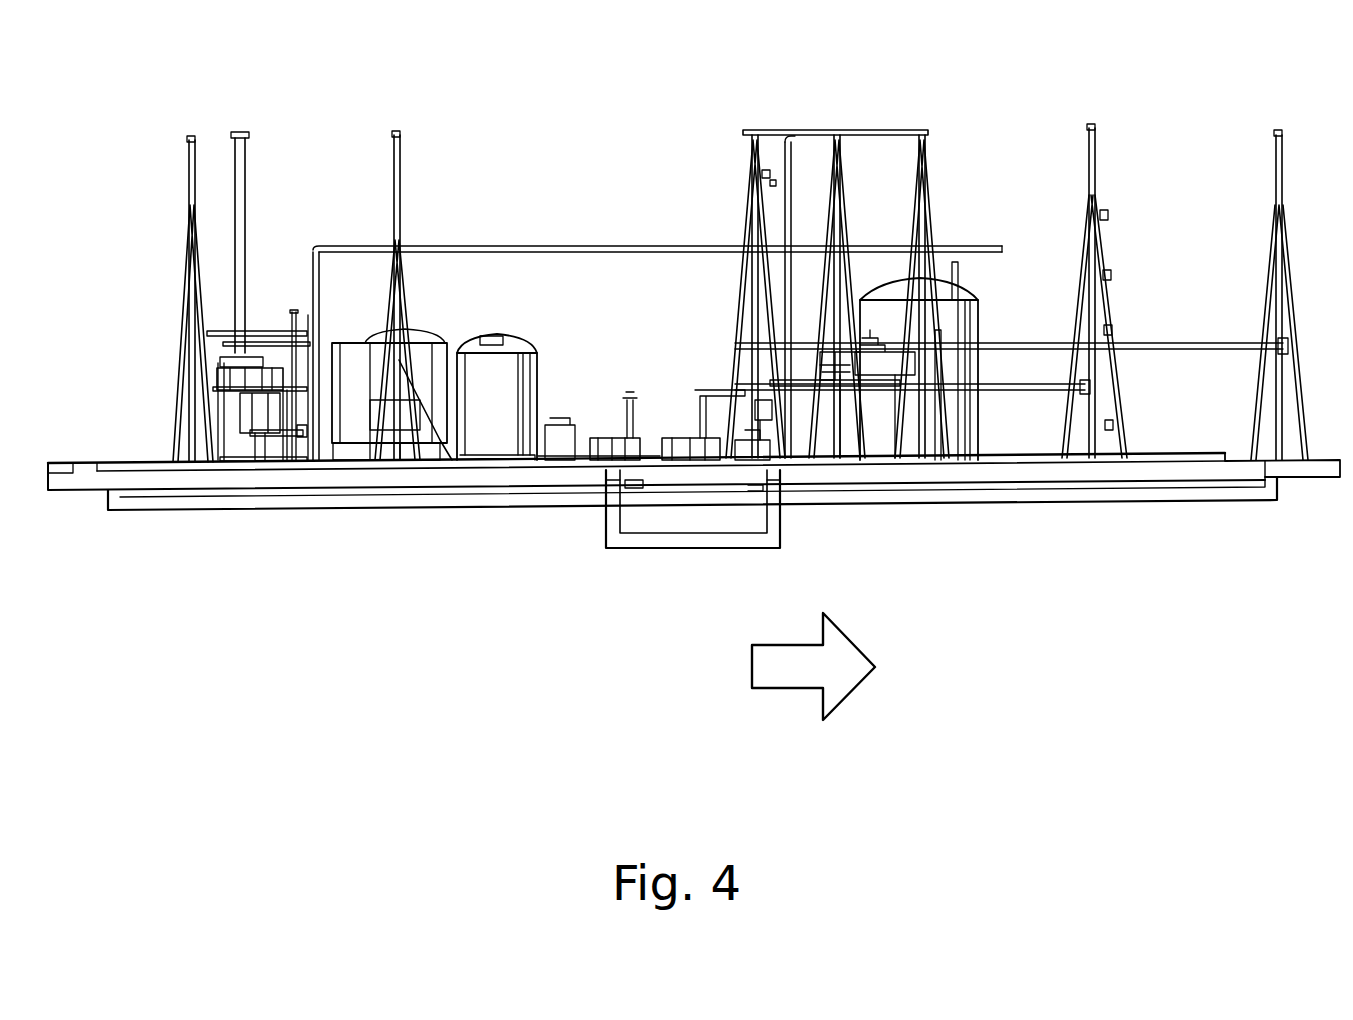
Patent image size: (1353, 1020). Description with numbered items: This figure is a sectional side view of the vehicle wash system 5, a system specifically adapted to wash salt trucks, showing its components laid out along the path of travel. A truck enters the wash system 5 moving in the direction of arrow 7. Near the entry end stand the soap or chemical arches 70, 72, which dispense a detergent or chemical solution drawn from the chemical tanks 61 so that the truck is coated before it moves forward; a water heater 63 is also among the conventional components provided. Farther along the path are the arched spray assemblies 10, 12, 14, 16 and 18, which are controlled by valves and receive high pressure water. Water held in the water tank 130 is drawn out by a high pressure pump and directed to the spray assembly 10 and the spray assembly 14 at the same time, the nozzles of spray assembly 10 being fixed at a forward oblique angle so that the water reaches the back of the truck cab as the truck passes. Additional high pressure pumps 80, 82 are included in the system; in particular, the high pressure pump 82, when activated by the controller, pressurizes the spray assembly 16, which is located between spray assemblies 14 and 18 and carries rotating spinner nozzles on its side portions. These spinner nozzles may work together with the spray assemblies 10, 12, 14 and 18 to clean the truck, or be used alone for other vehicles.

The vehicle wash system 5 is at (468, 612).
The arrow 7 is at (775, 688).
The spray assembly 10 is at (755, 176).
The spray assembly 12 is at (836, 172).
The spray assembly 14 is at (920, 172).
The spray assembly 16 is at (1090, 170).
The spray assembly 18 is at (1278, 153).
The chemical tanks 61 is at (515, 338).
The water heater 63 is at (259, 328).
The chemical arch 70 is at (189, 212).
The chemical arch 72 is at (402, 185).
The high pressure pump 80 is at (608, 438).
The high pressure pump 82 is at (683, 438).
The water tank 130 is at (958, 298).